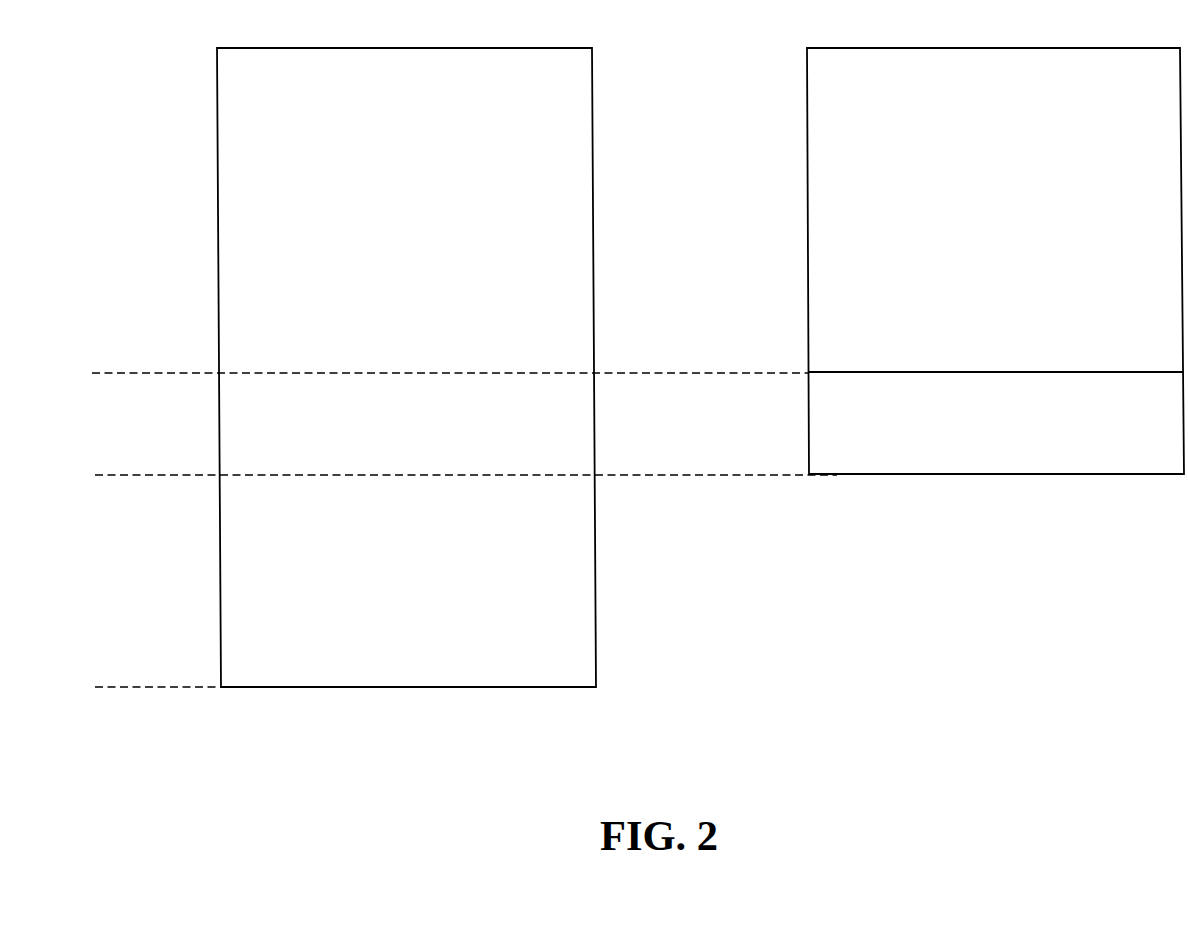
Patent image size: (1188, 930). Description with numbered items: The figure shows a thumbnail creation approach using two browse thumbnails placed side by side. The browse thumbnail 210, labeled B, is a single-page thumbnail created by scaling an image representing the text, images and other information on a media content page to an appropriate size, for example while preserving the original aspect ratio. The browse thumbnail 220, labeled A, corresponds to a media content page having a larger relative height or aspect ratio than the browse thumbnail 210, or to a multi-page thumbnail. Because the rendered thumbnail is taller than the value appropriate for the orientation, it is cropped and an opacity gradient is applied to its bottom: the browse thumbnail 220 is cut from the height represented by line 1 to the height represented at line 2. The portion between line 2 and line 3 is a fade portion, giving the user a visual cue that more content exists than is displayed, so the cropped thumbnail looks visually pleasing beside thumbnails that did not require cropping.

The browse thumbnail 220 is at (557, 48).
The browse thumbnail 210 is at (1115, 48).
The line 1 is at (150, 689).
The line 2 is at (452, 475).
The line 3 is at (438, 373).